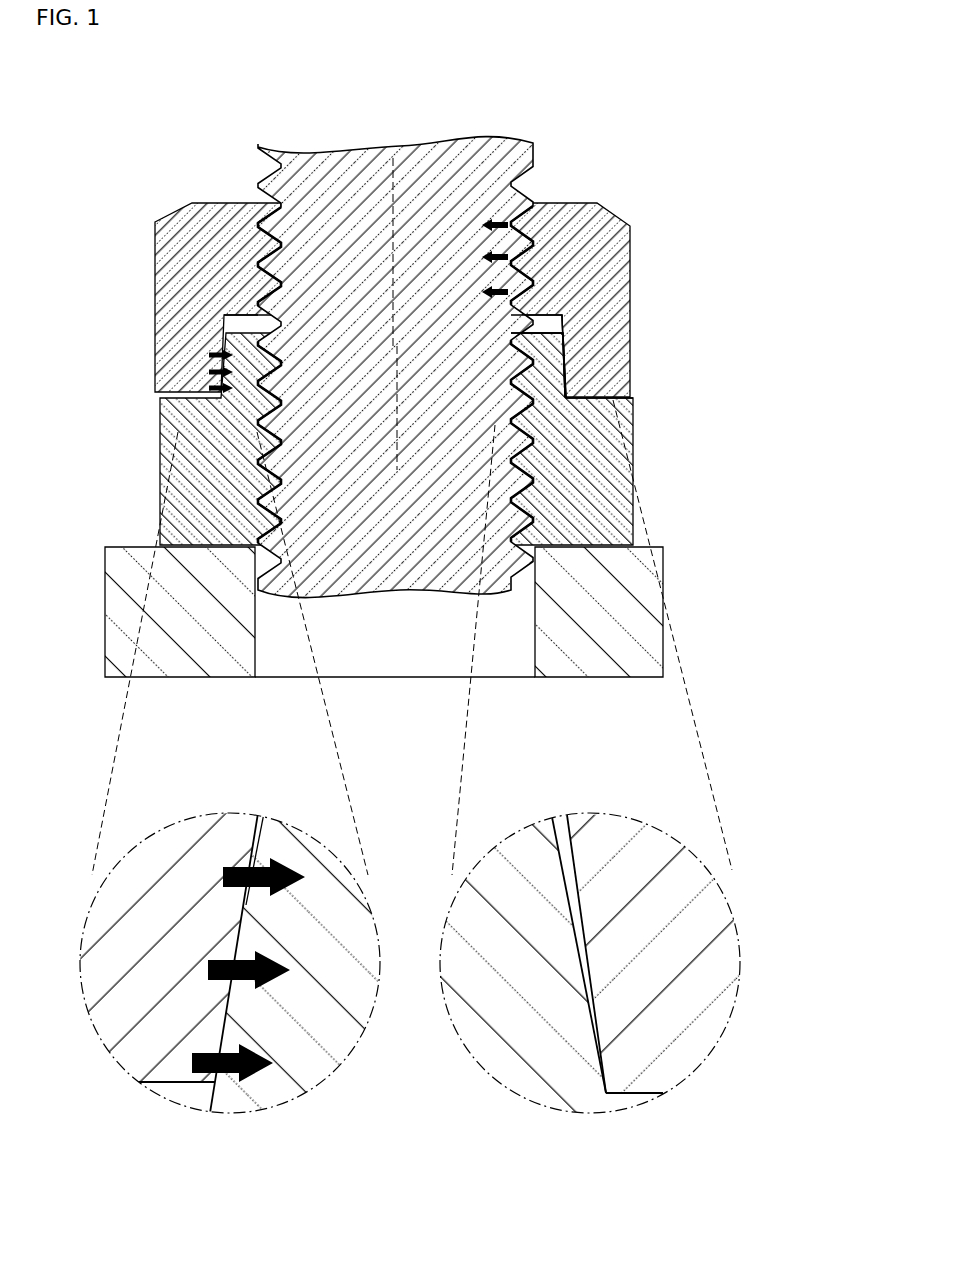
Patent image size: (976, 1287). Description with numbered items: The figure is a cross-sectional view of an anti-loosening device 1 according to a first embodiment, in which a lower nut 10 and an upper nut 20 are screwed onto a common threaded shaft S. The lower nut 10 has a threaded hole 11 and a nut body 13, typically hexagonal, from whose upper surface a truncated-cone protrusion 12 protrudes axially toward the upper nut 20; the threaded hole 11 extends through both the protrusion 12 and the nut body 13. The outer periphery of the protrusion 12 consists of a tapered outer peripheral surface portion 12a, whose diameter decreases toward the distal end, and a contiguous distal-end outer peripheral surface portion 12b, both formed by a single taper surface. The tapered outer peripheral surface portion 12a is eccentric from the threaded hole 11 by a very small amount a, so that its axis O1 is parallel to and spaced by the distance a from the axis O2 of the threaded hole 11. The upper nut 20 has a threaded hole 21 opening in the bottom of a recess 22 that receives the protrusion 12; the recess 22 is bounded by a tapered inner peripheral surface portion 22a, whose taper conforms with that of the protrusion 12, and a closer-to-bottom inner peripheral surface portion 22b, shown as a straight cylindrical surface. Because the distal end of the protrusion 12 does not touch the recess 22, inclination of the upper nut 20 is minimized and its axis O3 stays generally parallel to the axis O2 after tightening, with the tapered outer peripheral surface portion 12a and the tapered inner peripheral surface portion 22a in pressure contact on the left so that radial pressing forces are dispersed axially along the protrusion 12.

The anti-loosening device 1 is at (585, 184).
The threaded shaft S is at (262, 148).
The lower nut 10 is at (636, 459).
The threaded hole 11 is at (518, 512).
The protrusion 12 is at (545, 358).
The tapered outer peripheral surface portion 12a is at (566, 362).
The distal-end outer peripheral surface portion 12b is at (565, 333).
The nut body 13 is at (633, 437).
The upper nut 20 is at (632, 246).
The threaded hole 21 is at (513, 223).
The recess 22 is at (575, 330).
The tapered inner peripheral surface portion 22a is at (536, 396).
The closer-to-bottom inner peripheral surface portion 22b is at (253, 311).
The axis of the tapered outer peripheral surface portion O1 is at (393, 380).
The axis of the threaded hole O2 is at (397, 432).
The axis of the upper nut O3 is at (393, 165).
The eccentricity amount a is at (365, 344).